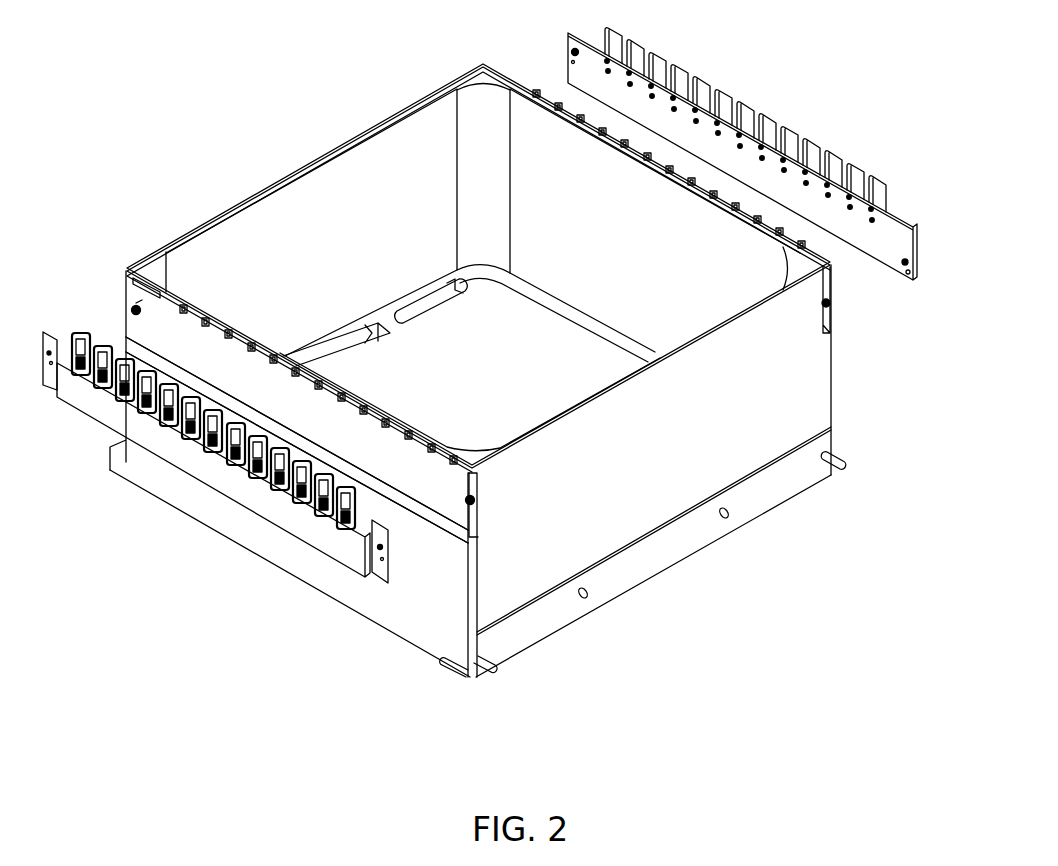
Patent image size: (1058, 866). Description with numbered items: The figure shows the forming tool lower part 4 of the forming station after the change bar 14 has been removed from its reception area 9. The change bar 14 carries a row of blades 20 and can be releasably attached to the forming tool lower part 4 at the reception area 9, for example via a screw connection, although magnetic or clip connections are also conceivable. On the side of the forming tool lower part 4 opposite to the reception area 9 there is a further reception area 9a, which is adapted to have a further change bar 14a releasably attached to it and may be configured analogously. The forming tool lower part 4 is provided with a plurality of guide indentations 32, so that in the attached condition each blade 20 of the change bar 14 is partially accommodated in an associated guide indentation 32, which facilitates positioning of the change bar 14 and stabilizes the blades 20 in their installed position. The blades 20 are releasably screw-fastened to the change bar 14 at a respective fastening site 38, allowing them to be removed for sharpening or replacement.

The forming tool lower part 4 is at (344, 70).
The reception area 9 is at (160, 328).
The further reception area 9a is at (840, 303).
The change bar 14 is at (334, 548).
The further change bar 14a is at (908, 196).
The blades 20 is at (188, 447).
The guide indentations 32 is at (172, 282).
The fastening site 38 is at (372, 523).